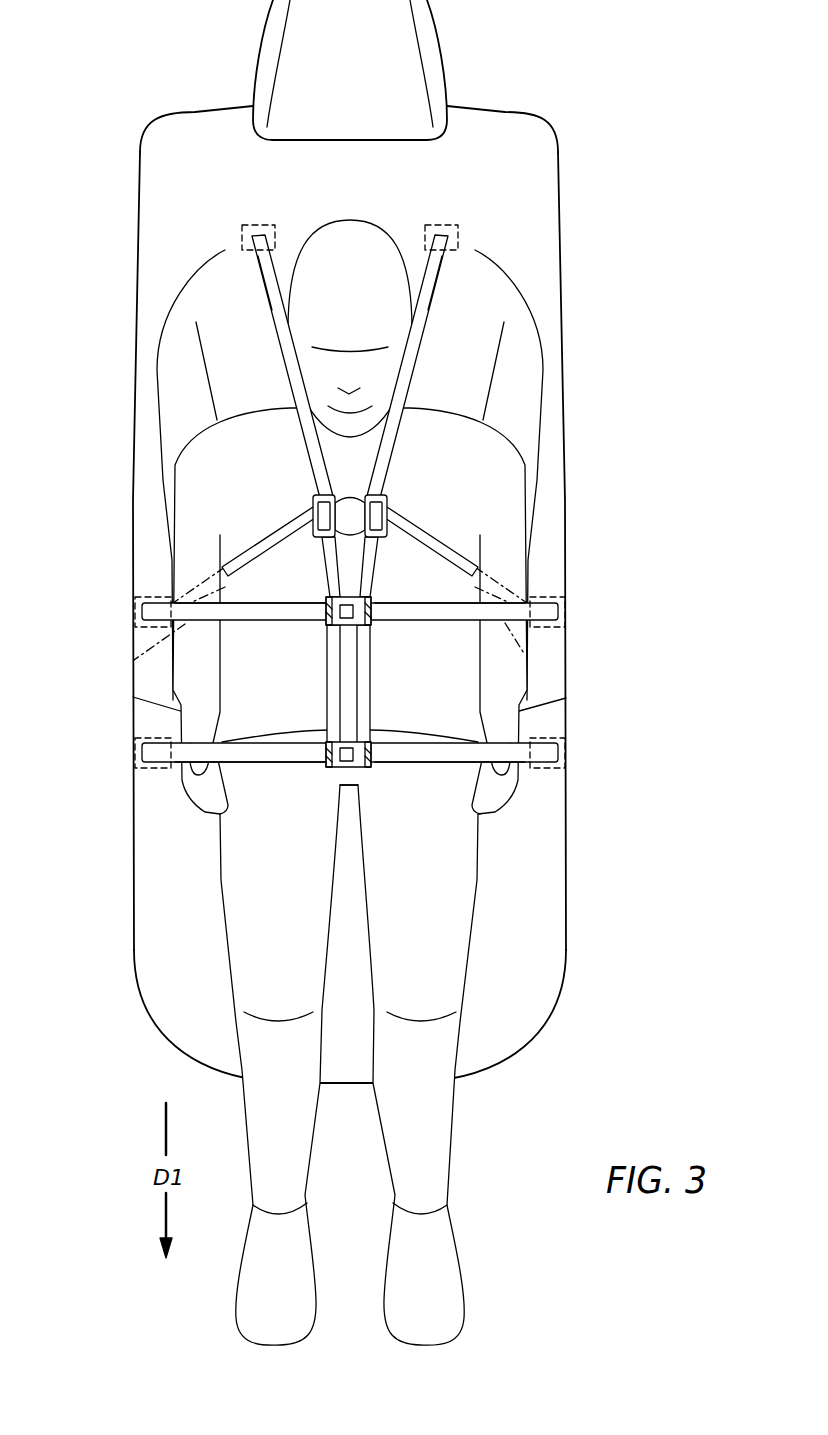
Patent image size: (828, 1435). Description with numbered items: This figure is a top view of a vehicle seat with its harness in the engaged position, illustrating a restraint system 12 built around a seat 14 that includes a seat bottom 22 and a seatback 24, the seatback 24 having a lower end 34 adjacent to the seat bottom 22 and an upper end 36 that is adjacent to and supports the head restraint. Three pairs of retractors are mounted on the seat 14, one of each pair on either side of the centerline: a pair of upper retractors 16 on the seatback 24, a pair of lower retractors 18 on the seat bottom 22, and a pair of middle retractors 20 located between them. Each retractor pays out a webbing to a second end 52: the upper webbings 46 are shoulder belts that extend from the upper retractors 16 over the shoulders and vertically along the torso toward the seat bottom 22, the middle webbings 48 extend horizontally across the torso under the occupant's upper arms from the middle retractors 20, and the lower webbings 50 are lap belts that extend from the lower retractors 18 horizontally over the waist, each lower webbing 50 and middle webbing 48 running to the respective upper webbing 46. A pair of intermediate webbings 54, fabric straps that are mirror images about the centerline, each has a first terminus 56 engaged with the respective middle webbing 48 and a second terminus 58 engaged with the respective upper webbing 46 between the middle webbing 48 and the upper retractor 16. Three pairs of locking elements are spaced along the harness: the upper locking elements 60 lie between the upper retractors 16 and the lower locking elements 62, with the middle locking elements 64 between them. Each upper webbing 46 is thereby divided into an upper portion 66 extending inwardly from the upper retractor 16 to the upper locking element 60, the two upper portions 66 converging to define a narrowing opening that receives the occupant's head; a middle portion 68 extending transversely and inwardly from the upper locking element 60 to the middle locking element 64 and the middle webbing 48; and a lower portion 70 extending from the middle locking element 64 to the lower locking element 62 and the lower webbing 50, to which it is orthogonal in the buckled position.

The restraint system 12 is at (130, 52).
The seat 14 is at (536, 106).
The upper retractors 16 is at (250, 225).
The lower retractors 18 is at (135, 755).
The middle retractors 20 is at (135, 612).
The seat bottom 22 is at (566, 940).
The seatback 24 is at (140, 190).
The lower end 34 is at (566, 715).
The upper end 36 is at (482, 107).
The upper webbings 46 is at (246, 281).
The middle webbings 48 is at (225, 562).
The lower webbings 50 is at (254, 776).
The second end 52 is at (324, 618).
The intermediate webbings 54 is at (258, 531).
The first terminus 56 is at (134, 660).
The second terminus 58 is at (313, 525).
The upper locking elements 60 is at (355, 489).
The lower locking elements 62 is at (348, 778).
The middle locking elements 64 is at (354, 590).
The upper portion 66 is at (265, 309).
The middle portion 68 is at (283, 590).
The lower portion 70 is at (326, 665).